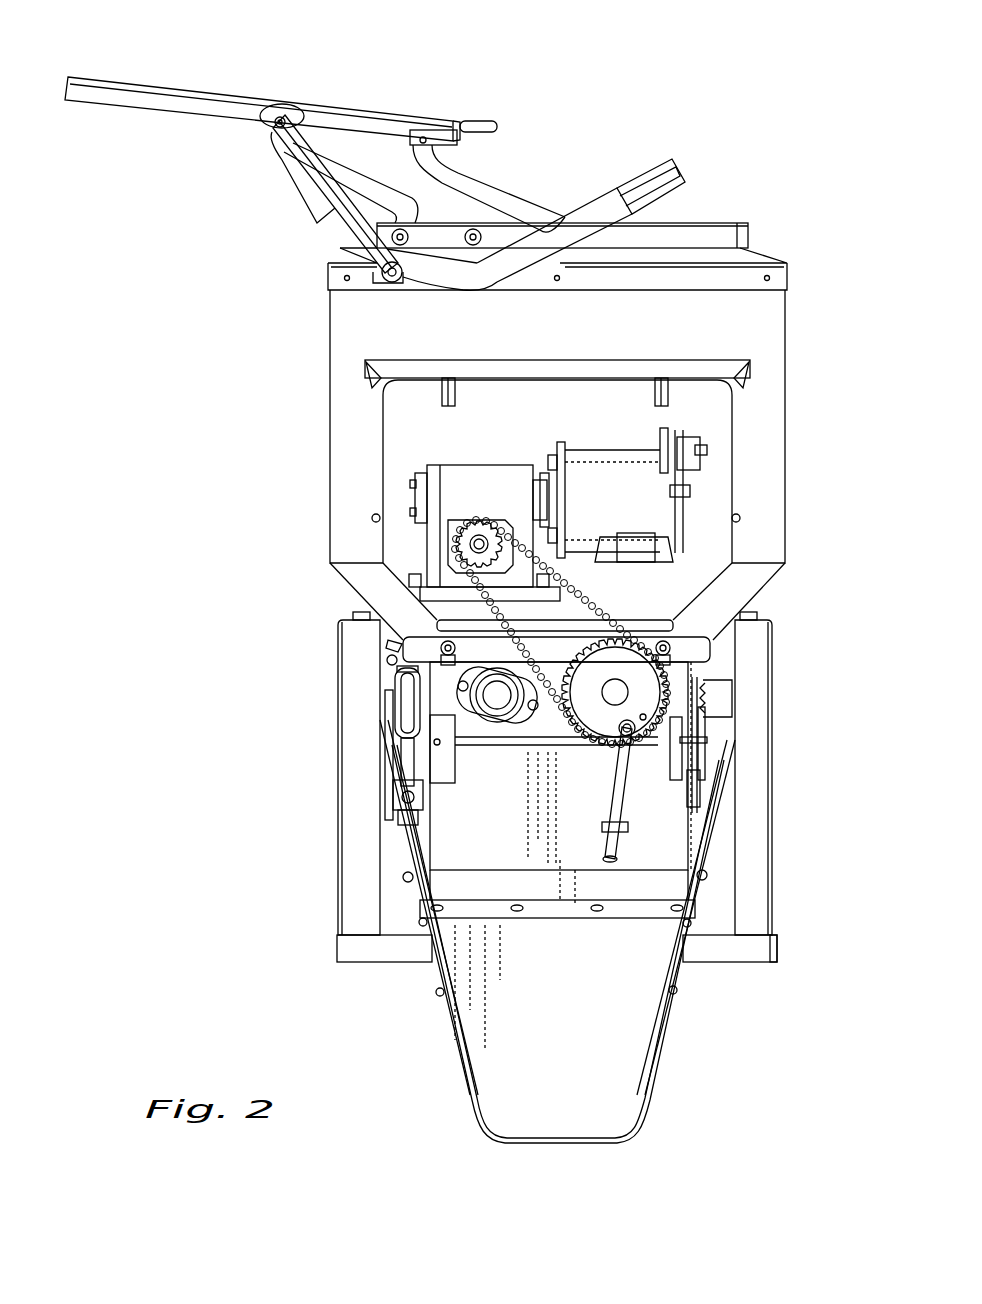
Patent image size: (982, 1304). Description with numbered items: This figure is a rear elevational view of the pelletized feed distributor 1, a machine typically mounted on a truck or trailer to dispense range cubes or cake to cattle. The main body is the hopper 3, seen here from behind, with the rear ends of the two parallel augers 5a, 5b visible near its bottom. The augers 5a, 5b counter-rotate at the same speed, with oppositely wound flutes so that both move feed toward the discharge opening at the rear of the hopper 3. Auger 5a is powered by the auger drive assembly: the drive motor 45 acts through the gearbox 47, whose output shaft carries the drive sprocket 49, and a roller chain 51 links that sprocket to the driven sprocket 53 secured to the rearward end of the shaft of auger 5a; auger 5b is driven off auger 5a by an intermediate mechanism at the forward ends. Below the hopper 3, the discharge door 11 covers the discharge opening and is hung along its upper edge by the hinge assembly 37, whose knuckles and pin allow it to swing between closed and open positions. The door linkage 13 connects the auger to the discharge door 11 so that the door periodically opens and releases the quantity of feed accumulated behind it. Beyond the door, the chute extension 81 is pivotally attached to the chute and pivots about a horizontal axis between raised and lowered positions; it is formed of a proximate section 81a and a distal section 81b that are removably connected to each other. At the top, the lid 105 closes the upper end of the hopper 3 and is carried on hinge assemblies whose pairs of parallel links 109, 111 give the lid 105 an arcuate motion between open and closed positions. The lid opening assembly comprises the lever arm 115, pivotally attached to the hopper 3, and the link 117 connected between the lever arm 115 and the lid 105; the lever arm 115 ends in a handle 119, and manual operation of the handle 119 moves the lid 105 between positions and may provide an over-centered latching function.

The pelletized feed distributor 1 is at (142, 311).
The hopper 3 is at (787, 358).
The auger 5a is at (622, 690).
The auger 5b is at (495, 695).
The discharge door 11 is at (445, 832).
The door linkage 13 is at (636, 805).
The hinge assembly 37 is at (725, 733).
The drive motor 45 is at (607, 450).
The gearbox 47 is at (482, 460).
The drive sprocket 49 is at (470, 532).
The roller chain 51 is at (597, 620).
The driven sprocket 53 is at (640, 698).
The chute extension 81 is at (537, 931).
The proximate section 81a is at (707, 895).
The distal section 81b is at (458, 1062).
The lid 105 is at (167, 88).
The link 109 is at (278, 177).
The link 111 is at (510, 178).
The lever arm 115 is at (437, 277).
The link 117 is at (360, 240).
The handle 119 is at (644, 178).